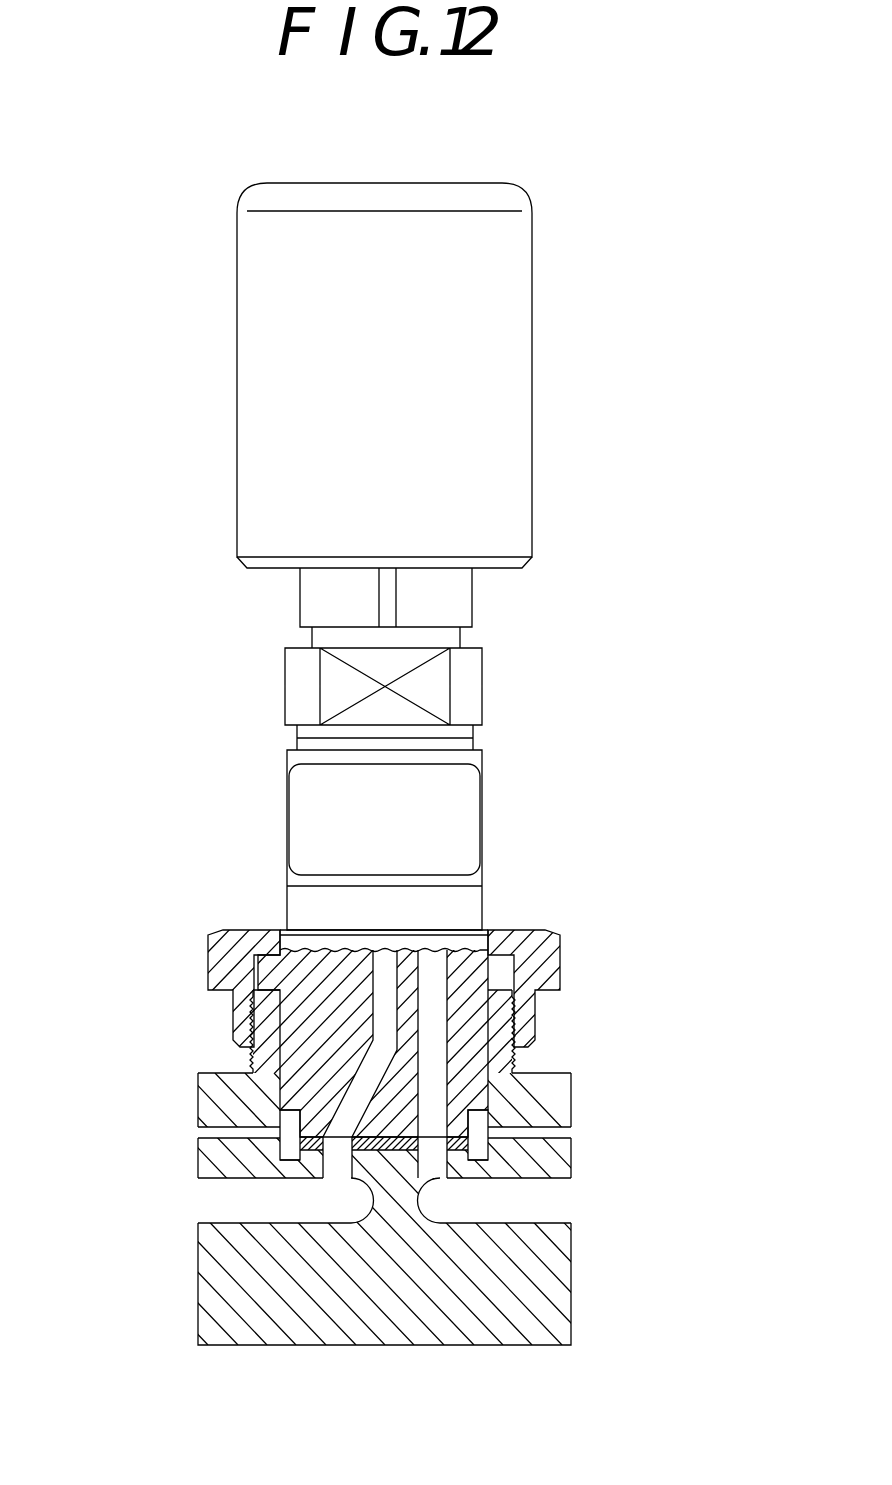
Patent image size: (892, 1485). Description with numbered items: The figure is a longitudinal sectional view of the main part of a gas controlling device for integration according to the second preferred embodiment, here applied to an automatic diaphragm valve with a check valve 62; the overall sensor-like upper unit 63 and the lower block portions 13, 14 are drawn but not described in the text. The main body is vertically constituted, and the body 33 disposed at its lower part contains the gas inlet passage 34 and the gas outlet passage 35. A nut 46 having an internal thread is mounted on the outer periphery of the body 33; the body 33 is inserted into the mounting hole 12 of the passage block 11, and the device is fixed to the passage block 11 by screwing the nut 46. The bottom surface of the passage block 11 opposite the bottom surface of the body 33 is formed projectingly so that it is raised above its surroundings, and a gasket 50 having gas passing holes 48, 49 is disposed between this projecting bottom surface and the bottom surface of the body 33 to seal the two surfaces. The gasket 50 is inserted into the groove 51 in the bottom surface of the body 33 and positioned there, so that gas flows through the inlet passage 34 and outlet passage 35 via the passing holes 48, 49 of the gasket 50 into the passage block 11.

The pressure sensor unit 63 is at (570, 316).
The automatic diaphragm valve with a check valve 62 is at (483, 838).
The body 33 is at (489, 927).
The nut 46 is at (220, 957).
The gas inlet passage 34 is at (357, 1082).
The mounting hole 12 is at (511, 1051).
The groove 51 is at (293, 1128).
The gas outlet passage 35 is at (437, 1090).
The gasket 50 is at (300, 1150).
The passage block 11 is at (574, 1140).
The inlet passage 13 is at (210, 1192).
The lower block 14 is at (557, 1188).
The gas passing hole 48 is at (343, 1148).
The gas passing hole 49 is at (470, 1195).